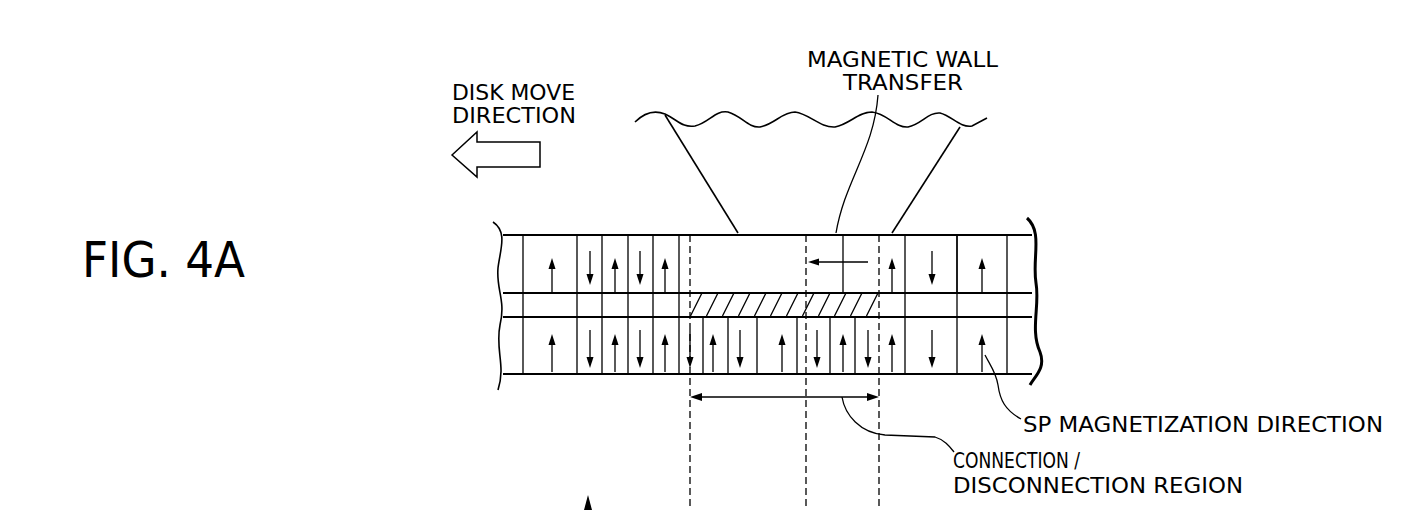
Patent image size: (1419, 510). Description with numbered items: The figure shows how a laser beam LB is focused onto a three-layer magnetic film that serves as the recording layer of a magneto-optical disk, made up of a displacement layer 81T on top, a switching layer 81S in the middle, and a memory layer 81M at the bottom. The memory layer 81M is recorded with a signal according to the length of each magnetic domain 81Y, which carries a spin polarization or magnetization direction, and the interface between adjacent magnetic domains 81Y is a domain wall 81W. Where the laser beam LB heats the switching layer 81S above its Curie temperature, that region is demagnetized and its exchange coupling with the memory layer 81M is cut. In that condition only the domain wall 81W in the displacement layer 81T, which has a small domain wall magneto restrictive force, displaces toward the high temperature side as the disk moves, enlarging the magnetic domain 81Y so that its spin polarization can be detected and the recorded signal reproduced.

The displacement layer 81T is at (1015, 260).
The switching layer 81S is at (1020, 302).
The memory layer 81M is at (1020, 344).
The magnetic domain 81Y is at (562, 250).
The domain wall 81W is at (951, 233).
The laser beam LB is at (920, 146).